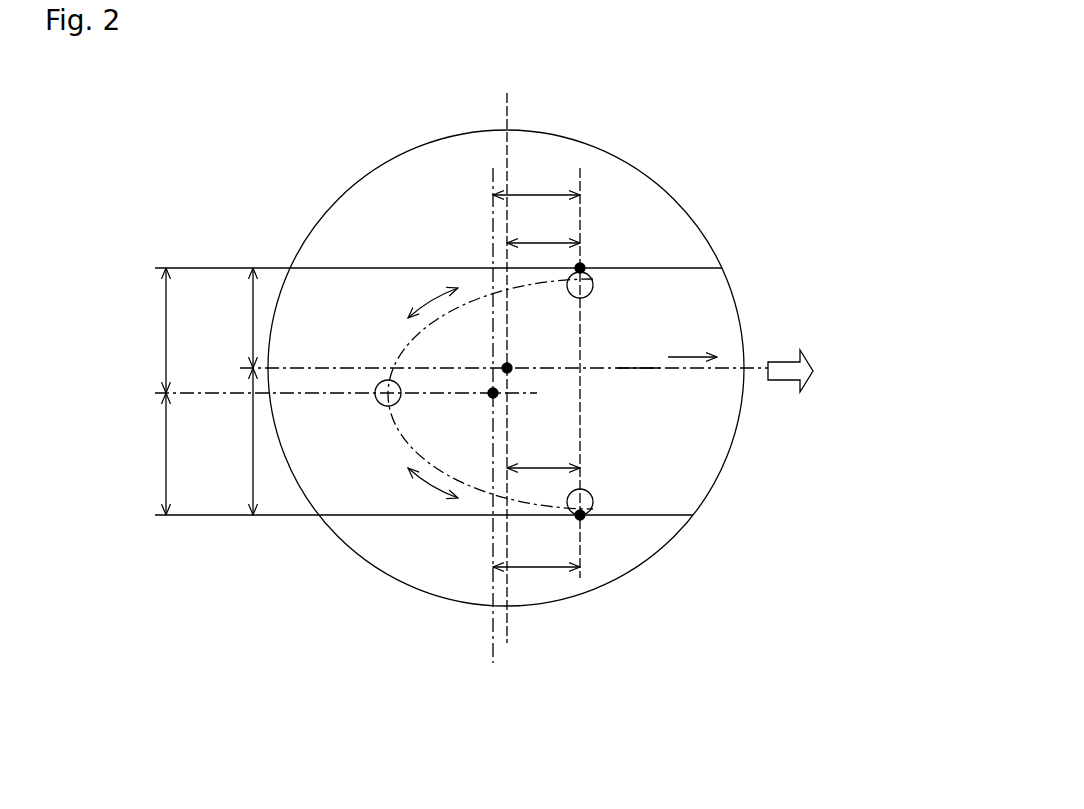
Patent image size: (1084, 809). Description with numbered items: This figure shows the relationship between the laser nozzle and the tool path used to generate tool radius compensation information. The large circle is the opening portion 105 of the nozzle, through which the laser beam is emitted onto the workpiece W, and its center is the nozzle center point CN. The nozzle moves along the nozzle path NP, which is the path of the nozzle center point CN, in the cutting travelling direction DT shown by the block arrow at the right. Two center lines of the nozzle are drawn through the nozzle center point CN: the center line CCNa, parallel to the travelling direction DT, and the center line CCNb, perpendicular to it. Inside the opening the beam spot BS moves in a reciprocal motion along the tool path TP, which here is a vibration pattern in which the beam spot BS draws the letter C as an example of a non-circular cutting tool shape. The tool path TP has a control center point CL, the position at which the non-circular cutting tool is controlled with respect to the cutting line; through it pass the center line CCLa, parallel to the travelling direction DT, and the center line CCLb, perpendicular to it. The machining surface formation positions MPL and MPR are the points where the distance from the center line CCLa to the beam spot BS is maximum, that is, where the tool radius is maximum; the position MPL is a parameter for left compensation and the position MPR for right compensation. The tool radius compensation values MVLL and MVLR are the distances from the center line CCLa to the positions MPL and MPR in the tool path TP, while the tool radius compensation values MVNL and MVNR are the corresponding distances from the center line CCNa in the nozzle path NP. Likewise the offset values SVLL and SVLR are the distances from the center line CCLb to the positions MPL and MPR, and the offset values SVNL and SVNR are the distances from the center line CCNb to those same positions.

The opening portion 105 is at (632, 178).
The workpiece W is at (357, 233).
The center line of the nozzle (perpendicular) CCNb is at (508, 358).
The center line (perpendicular) CCLb is at (489, 430).
The center line of the nozzle (parallel) CCNa is at (471, 368).
The center line (parallel) CCLa is at (314, 391).
The tool radius compensation value MVLR is at (131, 330).
The tool radius compensation value MVLL is at (131, 454).
The tool radius compensation value MVNR is at (217, 318).
The tool radius compensation value MVNL is at (217, 441).
The offset value SVLR is at (536, 185).
The offset value SVNR is at (543, 235).
The offset value SVNL is at (543, 458).
The offset value SVLL is at (536, 556).
The tool path TP is at (416, 335).
The machining surface formation position MPR is at (582, 265).
The machining surface formation position MPL is at (583, 519).
The nozzle center point CN is at (509, 366).
The control center point CL is at (491, 395).
The beam spot BS is at (592, 294).
The nozzle path NP is at (630, 370).
The travelling direction DT is at (813, 373).